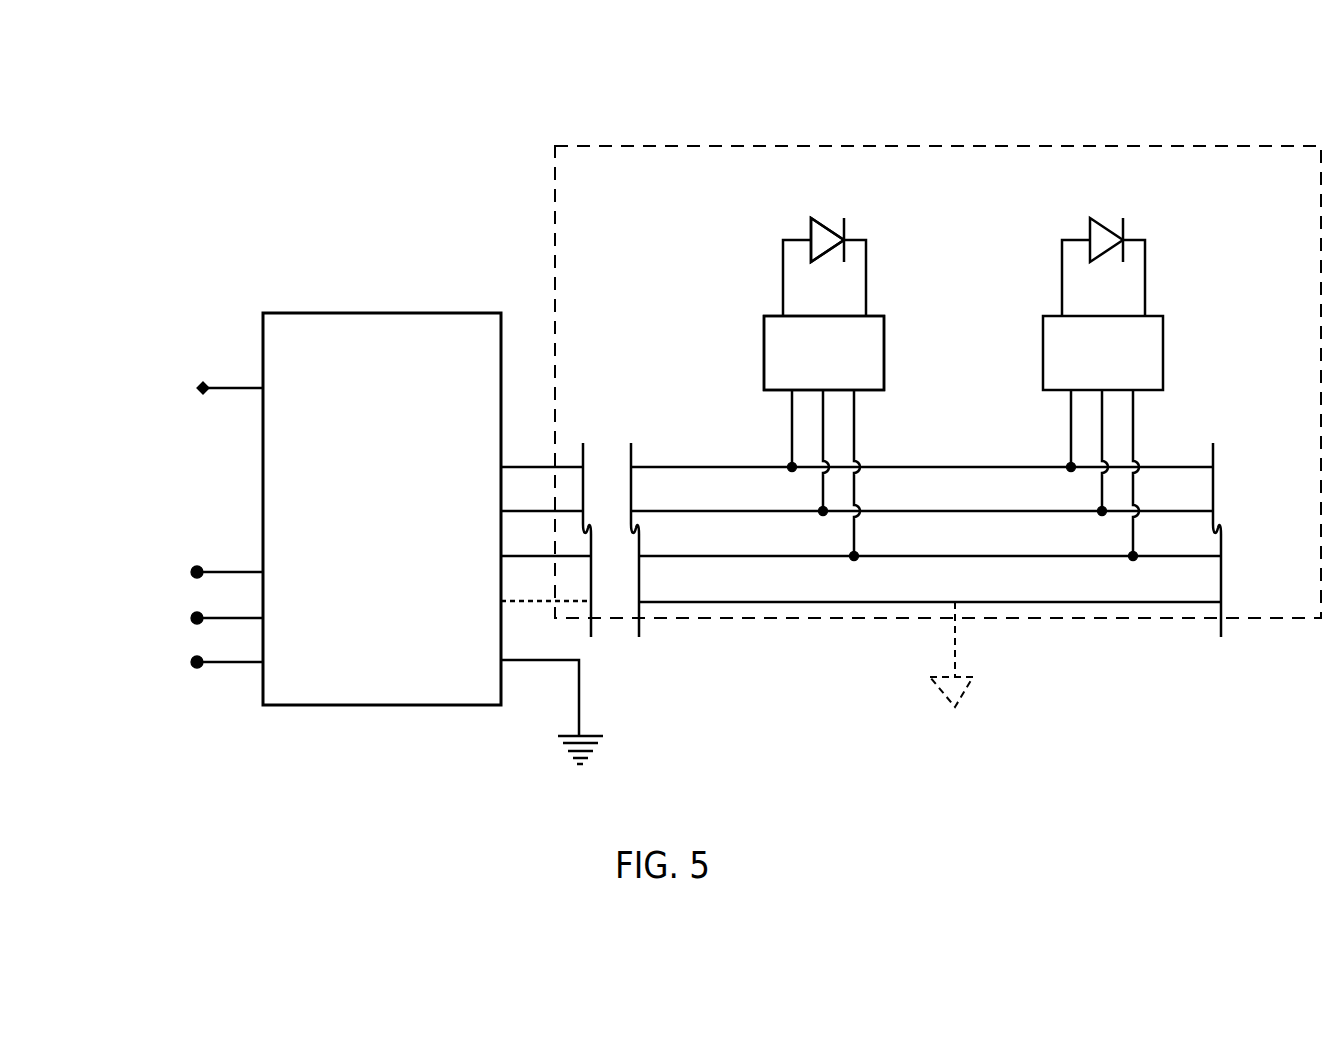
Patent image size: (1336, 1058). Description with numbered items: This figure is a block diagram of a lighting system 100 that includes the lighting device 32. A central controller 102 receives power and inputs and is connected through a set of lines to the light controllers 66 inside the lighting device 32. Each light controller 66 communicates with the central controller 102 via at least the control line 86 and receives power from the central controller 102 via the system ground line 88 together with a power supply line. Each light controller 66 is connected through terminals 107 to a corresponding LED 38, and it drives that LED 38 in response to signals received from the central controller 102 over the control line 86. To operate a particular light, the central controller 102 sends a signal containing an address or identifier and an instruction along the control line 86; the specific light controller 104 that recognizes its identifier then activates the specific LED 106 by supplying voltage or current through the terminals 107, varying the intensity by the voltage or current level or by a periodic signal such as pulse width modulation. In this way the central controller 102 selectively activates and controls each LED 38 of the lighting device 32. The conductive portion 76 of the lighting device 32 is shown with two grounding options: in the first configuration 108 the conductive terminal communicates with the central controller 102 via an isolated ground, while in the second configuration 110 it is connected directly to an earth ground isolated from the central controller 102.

The lighting system 100 is at (476, 212).
The lighting device 32 is at (978, 146).
The central controller 102 is at (647, 538).
The specific light controller 104 is at (768, 327).
The specific LED 106 is at (817, 220).
The LED 38 is at (823, 238).
The terminals 107 is at (783, 307).
The light controller 66 is at (963, 438).
The system ground line 88 is at (1181, 467).
The control line 86 is at (1194, 511).
The first configuration 108 is at (537, 602).
The second configuration 110 is at (953, 642).
The conductive portion 76 is at (1038, 603).